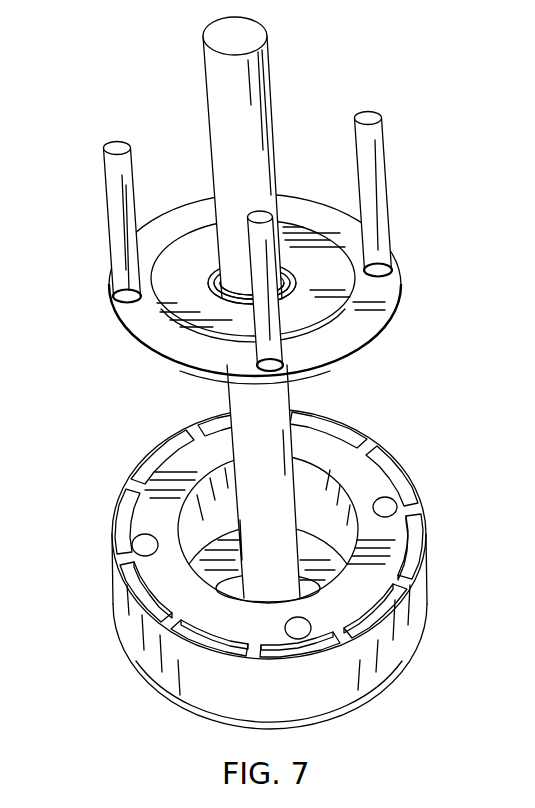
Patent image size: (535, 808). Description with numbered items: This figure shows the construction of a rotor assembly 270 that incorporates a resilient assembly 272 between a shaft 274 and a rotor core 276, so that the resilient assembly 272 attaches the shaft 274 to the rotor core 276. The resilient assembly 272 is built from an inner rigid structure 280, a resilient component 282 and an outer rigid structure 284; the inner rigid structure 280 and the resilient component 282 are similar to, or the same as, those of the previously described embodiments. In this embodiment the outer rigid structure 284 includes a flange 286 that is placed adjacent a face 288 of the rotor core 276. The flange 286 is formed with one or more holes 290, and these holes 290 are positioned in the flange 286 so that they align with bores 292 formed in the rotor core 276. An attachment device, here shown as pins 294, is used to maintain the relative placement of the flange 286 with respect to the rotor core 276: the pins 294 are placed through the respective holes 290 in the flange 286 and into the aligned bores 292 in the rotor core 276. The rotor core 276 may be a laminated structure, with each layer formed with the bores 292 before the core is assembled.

The rotor assembly 270 is at (372, 53).
The resilient assembly 272 is at (158, 355).
The shaft 274 is at (208, 103).
The rotor core 276 is at (426, 530).
The inner rigid structure 280 is at (292, 284).
The resilient component 282 is at (230, 333).
The outer rigid structure 284 is at (399, 278).
The flange 286 is at (140, 333).
The face 288 is at (167, 592).
The holes 290 is at (397, 291).
The bores 292 is at (386, 497).
The pins 294 is at (387, 163).